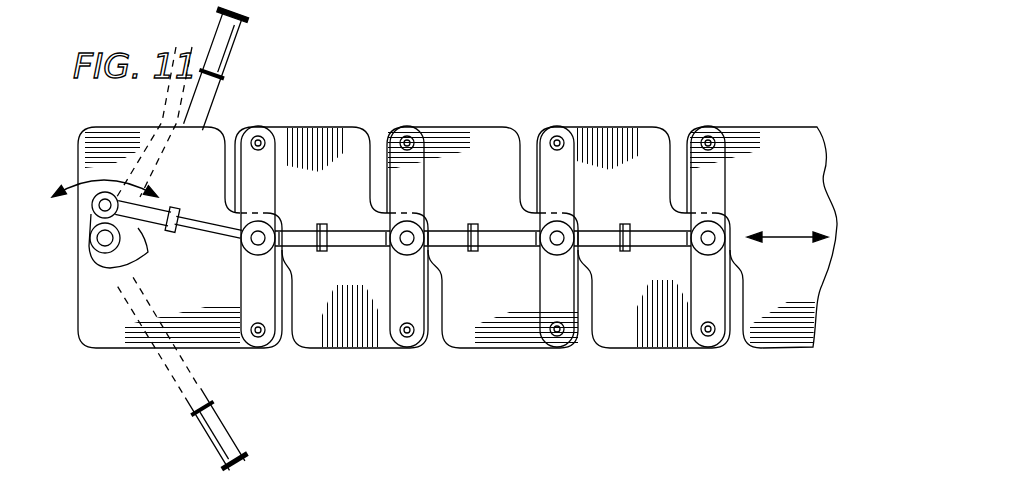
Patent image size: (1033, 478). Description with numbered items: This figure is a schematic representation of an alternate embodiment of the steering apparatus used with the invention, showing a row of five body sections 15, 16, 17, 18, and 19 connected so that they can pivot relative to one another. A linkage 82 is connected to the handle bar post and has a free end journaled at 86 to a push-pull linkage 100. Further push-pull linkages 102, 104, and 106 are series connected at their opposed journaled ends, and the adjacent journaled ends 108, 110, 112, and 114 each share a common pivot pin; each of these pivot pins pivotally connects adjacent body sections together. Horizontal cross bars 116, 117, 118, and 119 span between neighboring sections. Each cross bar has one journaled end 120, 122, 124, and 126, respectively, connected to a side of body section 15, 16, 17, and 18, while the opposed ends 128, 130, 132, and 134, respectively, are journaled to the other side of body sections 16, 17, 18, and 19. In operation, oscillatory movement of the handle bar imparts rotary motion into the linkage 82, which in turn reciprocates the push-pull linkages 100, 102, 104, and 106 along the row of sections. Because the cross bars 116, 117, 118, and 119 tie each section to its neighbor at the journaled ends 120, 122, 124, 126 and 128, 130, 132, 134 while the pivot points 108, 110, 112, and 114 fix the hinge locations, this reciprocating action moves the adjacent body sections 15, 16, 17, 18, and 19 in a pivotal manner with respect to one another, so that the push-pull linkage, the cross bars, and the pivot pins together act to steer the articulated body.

The body section 15 is at (176, 156).
The body section 16 is at (328, 157).
The body section 17 is at (475, 157).
The body section 18 is at (630, 157).
The body section 19 is at (790, 157).
The linkage 82 is at (92, 228).
The journal 86 is at (98, 203).
The push-pull linkage 100 is at (165, 224).
The push-pull linkage 102 is at (360, 247).
The push-pull linkage 104 is at (512, 247).
The push-pull linkage 106 is at (664, 247).
The journaled end 108 is at (250, 243).
The journaled end 110 is at (404, 242).
The journaled end 112 is at (555, 242).
The journaled end 114 is at (707, 242).
The horizontal cross bar 116 is at (265, 187).
The horizontal cross bar 117 is at (413, 185).
The horizontal cross bar 118 is at (570, 190).
The horizontal cross bar 119 is at (713, 193).
The journaled end 120 is at (255, 350).
The journaled end 122 is at (404, 338).
The journaled end 124 is at (556, 338).
The journaled end 126 is at (708, 338).
The journaled end 128 is at (258, 136).
The journaled end 130 is at (407, 136).
The journaled end 132 is at (557, 136).
The journaled end 134 is at (708, 136).